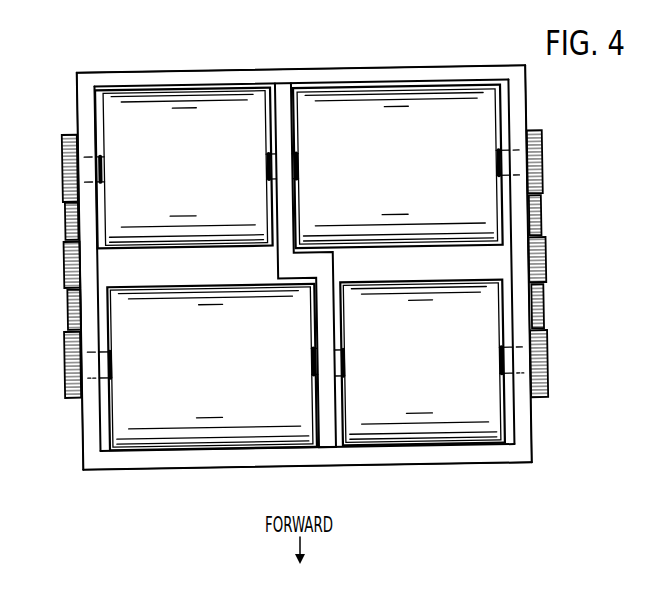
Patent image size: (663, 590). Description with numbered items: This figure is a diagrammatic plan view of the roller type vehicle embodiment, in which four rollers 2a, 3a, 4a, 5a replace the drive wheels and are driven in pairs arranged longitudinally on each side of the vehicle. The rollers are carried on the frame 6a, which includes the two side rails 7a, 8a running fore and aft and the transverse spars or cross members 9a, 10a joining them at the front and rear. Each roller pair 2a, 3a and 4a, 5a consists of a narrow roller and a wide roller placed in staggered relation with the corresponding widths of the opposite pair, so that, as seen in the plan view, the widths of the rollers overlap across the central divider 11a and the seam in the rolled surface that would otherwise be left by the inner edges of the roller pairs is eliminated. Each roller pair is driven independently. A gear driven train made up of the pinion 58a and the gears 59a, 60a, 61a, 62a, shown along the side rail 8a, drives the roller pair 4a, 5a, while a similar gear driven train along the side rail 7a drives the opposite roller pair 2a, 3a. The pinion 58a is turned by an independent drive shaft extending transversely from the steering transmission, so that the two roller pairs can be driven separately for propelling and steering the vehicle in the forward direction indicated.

The roller 2a is at (153, 110).
The roller 3a is at (168, 403).
The roller 4a is at (427, 117).
The roller 5a is at (422, 415).
The frame 6a is at (224, 52).
The side rail 7a is at (83, 97).
The side rail 8a is at (525, 423).
The cross member 9a is at (350, 70).
The cross member 10a is at (278, 458).
The central divider 11a is at (308, 264).
The pinion 58a is at (67, 268).
The gear 59a is at (68, 223).
The gear 60a is at (68, 317).
The gear 61a is at (72, 170).
The gear 62a is at (72, 370).